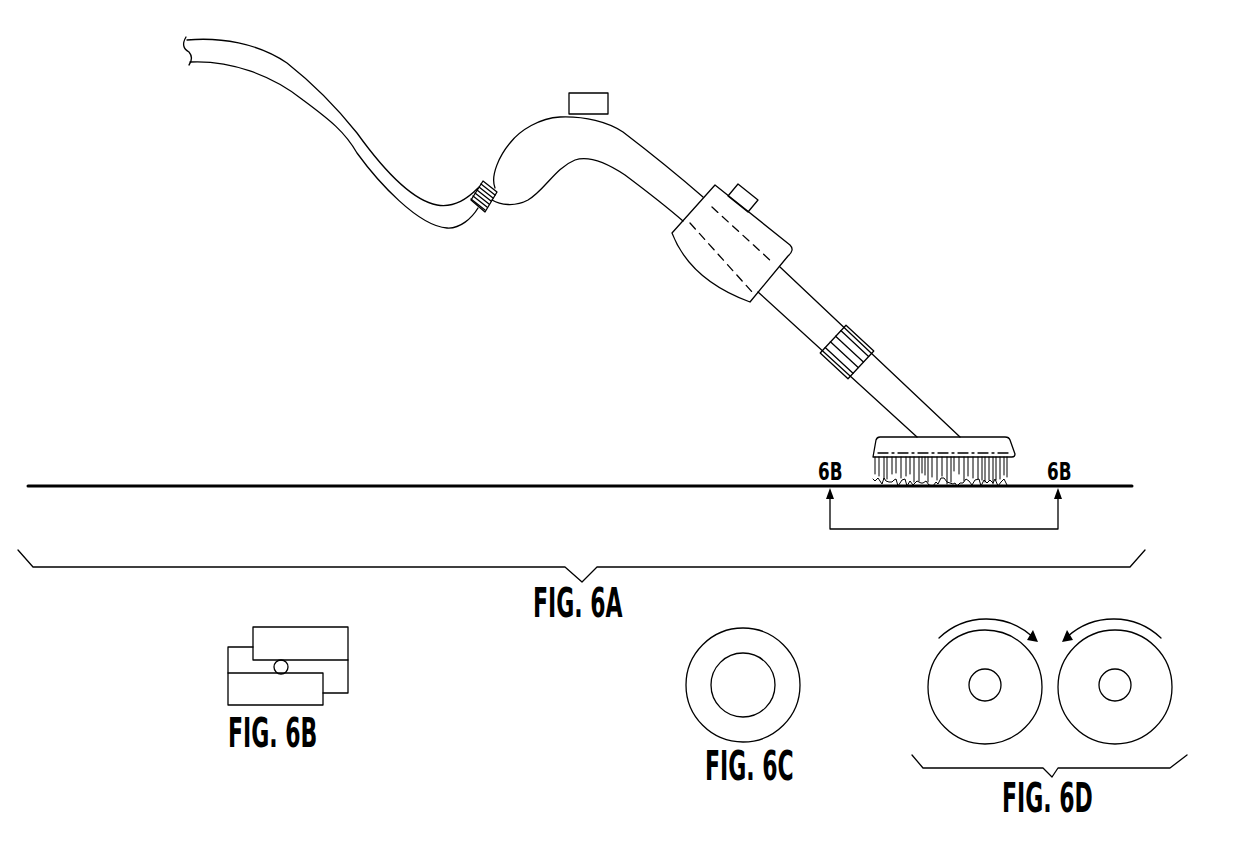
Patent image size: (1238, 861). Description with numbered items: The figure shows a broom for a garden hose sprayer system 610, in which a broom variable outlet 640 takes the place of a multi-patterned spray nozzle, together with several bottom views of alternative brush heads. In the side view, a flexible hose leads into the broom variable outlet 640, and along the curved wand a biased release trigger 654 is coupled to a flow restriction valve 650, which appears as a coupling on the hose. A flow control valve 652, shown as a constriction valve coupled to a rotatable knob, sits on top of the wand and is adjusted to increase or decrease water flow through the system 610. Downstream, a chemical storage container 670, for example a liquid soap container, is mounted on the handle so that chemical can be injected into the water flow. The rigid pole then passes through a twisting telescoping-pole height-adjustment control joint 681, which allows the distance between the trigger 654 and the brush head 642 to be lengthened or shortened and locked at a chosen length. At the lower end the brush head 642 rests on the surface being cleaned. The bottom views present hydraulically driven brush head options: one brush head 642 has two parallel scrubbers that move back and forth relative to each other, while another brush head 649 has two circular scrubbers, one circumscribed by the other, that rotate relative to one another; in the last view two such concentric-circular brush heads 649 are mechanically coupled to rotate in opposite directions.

In FIG. 6A, the sprayer system 610 is at (599, 289).
In FIG. 6A, the broom variable outlet 640 is at (607, 156).
In FIG. 6A, the brush head 642 is at (944, 503).
In FIG. 6B, the brush head 642 is at (252, 666).
In FIG. 6C, the brush head 649 is at (743, 662).
In FIG. 6D, the brush head 649 is at (1050, 681).
In FIG. 6A, the flow restriction valve 650 is at (460, 173).
In FIG. 6A, the flow control valve 652 is at (582, 74).
In FIG. 6A, the biased release trigger 654 is at (587, 197).
In FIG. 6A, the chemical storage container 670 is at (742, 217).
In FIG. 6A, the twisting telescoping-pole height-adjustment control joint 681 is at (869, 335).